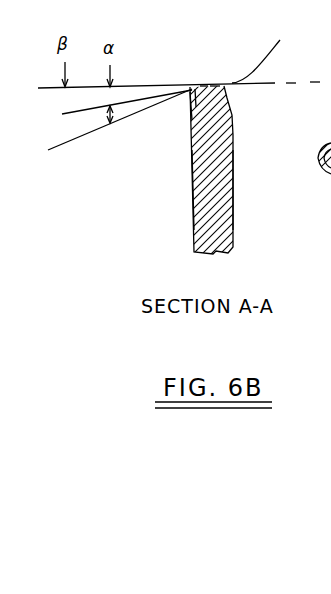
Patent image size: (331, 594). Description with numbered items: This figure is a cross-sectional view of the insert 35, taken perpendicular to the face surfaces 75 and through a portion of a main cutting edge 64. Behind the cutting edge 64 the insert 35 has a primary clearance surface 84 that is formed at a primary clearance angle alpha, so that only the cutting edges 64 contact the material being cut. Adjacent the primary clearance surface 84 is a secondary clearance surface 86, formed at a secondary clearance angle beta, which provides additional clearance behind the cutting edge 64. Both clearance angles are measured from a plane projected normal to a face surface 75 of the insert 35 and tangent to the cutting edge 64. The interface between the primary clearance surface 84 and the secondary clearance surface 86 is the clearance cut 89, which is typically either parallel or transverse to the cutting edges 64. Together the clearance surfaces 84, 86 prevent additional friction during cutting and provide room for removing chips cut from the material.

The insert 35 is at (240, 206).
The cutting edge 64 is at (268, 54).
The face surface 75 is at (193, 192).
The primary clearance surface 84 is at (214, 86).
The secondary clearance surface 86 is at (191, 112).
The clearance cut 89 is at (204, 86).